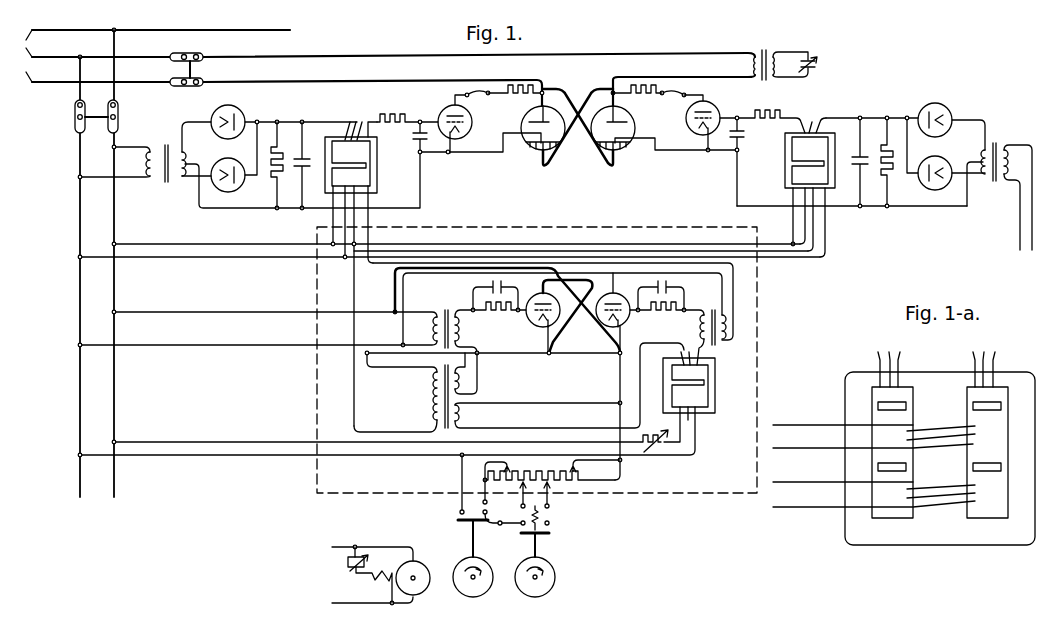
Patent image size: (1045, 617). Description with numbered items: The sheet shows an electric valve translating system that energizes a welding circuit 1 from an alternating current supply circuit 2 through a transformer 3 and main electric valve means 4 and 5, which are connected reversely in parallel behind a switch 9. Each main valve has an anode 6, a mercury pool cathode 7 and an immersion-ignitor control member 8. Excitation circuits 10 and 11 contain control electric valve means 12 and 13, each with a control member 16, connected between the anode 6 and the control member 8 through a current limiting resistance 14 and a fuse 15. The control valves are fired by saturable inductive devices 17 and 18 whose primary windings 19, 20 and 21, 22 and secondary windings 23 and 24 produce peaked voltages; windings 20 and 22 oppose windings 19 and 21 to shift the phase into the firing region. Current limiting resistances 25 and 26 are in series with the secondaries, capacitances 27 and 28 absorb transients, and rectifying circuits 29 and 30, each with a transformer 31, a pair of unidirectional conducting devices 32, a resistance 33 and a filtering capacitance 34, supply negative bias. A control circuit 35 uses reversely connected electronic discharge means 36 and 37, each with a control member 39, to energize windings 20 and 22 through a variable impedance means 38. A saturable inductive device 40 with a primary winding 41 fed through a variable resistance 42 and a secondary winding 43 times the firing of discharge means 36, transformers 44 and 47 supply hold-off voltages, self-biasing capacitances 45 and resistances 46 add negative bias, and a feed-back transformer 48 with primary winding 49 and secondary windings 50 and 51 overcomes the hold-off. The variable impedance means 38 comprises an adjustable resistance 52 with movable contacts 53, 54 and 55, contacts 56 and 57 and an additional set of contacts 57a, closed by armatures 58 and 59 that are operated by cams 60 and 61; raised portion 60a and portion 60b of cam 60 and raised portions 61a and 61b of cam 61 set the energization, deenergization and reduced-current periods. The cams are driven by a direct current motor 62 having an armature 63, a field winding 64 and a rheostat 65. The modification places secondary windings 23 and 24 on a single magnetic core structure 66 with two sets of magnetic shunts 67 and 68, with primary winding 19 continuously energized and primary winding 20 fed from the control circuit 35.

In FIG. 1, the welding circuit 1 is at (811, 75).
In FIG. 1, the alternating current supply circuit 2 is at (381, 67).
In FIG. 1, the transformer 3 is at (764, 50).
In FIG. 1, the main electric valve means 4 is at (552, 104).
In FIG. 1, the main electric valve means 5 is at (606, 104).
In FIG. 1, the anode 6 is at (526, 122).
In FIG. 1, the mercury pool cathode 7 is at (536, 148).
In FIG. 1, the control member 8 is at (516, 140).
In FIG. 1, the switch 9 is at (186, 88).
In FIG. 1, the excitation circuit 10 is at (358, 115).
In FIG. 1, the excitation circuit 11 is at (872, 133).
In FIG. 1, the control electric valve means 12 is at (448, 106).
In FIG. 1, the control electric valve means 13 is at (712, 106).
In FIG. 1, the current limiting resistance 14 is at (518, 96).
In FIG. 1, the fuse 15 is at (480, 98).
In FIG. 1, the control member 16 is at (468, 128).
In FIG. 1, the saturable inductive device 17 is at (361, 165).
In FIG. 1, the saturable inductive device 18 is at (797, 160).
In FIG. 1, the primary winding 19 is at (333, 196).
In FIG. 1A, the primary winding 19 is at (975, 492).
In FIG. 1, the primary winding 20 is at (368, 196).
In FIG. 1A, the primary winding 20 is at (975, 432).
In FIG. 1, the primary winding 21 is at (793, 192).
In FIG. 1, the primary winding 22 is at (825, 192).
In FIG. 1, the secondary winding 23 is at (350, 128).
In FIG. 1A, the secondary winding 23 is at (889, 363).
In FIG. 1, the secondary winding 24 is at (812, 128).
In FIG. 1A, the secondary winding 24 is at (984, 363).
In FIG. 1, the current limiting resistance 25 is at (407, 109).
In FIG. 1, the current limiting resistance 26 is at (771, 114).
In FIG. 1, the capacitance 27 is at (414, 140).
In FIG. 1, the capacitance 28 is at (745, 135).
In FIG. 1, the rectifying circuit 29 is at (302, 165).
In FIG. 1, the rectifying circuit 30 is at (852, 163).
In FIG. 1, the transformer 31 is at (166, 144).
In FIG. 1, the unidirectional conducting device 32 is at (240, 140).
In FIG. 1, the resistance 33 is at (270, 182).
In FIG. 1, the capacitance 34 is at (308, 160).
In FIG. 1, the control circuit 35 is at (317, 290).
In FIG. 1, the electronic discharge means 36 is at (622, 288).
In FIG. 1, the electronic discharge means 37 is at (538, 293).
In FIG. 1, the variable impedance means 38 is at (569, 504).
In FIG. 1, the control member 39 is at (536, 320).
In FIG. 1, the saturable inductive device 40 is at (703, 385).
In FIG. 1, the primary winding 41 is at (690, 416).
In FIG. 1, the variable resistance 42 is at (648, 452).
In FIG. 1, the secondary winding 43 is at (710, 370).
In FIG. 1, the transformer 44 is at (712, 308).
In FIG. 1, the capacitance 45 is at (490, 284).
In FIG. 1, the resistance 46 is at (498, 313).
In FIG. 1, the transformer 47 is at (447, 310).
In FIG. 1, the feed-back transformer 48 is at (443, 370).
In FIG. 1, the primary winding 49 is at (428, 397).
In FIG. 1, the secondary winding 50 is at (461, 413).
In FIG. 1, the secondary winding 51 is at (461, 378).
In FIG. 1, the adjustable resistance 52 is at (590, 482).
In FIG. 1, the movable contact 53 is at (583, 463).
In FIG. 1, the movable contact 54 is at (556, 490).
In FIG. 1, the movable contact 55 is at (506, 467).
In FIG. 1, the contact 56 is at (458, 512).
In FIG. 1, the contact 57 is at (520, 528).
In FIG. 1, the additional set of contacts 57a is at (500, 502).
In FIG. 1, the armature 58 is at (470, 524).
In FIG. 1, the armature 59 is at (549, 533).
In FIG. 1, the cam 60 is at (473, 597).
In FIG. 1, the raised portion 60a is at (457, 565).
In FIG. 1, the portion 60b is at (488, 590).
In FIG. 1, the cam 61 is at (552, 587).
In FIG. 1, the raised portion 61a is at (520, 565).
In FIG. 1, the raised portion 61b is at (522, 595).
In FIG. 1, the direct current motor 62 is at (372, 581).
In FIG. 1, the armature 63 is at (427, 588).
In FIG. 1, the field winding 64 is at (374, 590).
In FIG. 1, the rheostat 65 is at (348, 562).
In FIG. 1A, the magnetic core structure 66 is at (1022, 372).
In FIG. 1A, the magnetic shunt 67 is at (973, 406).
In FIG. 1A, the magnetic shunt 68 is at (973, 467).